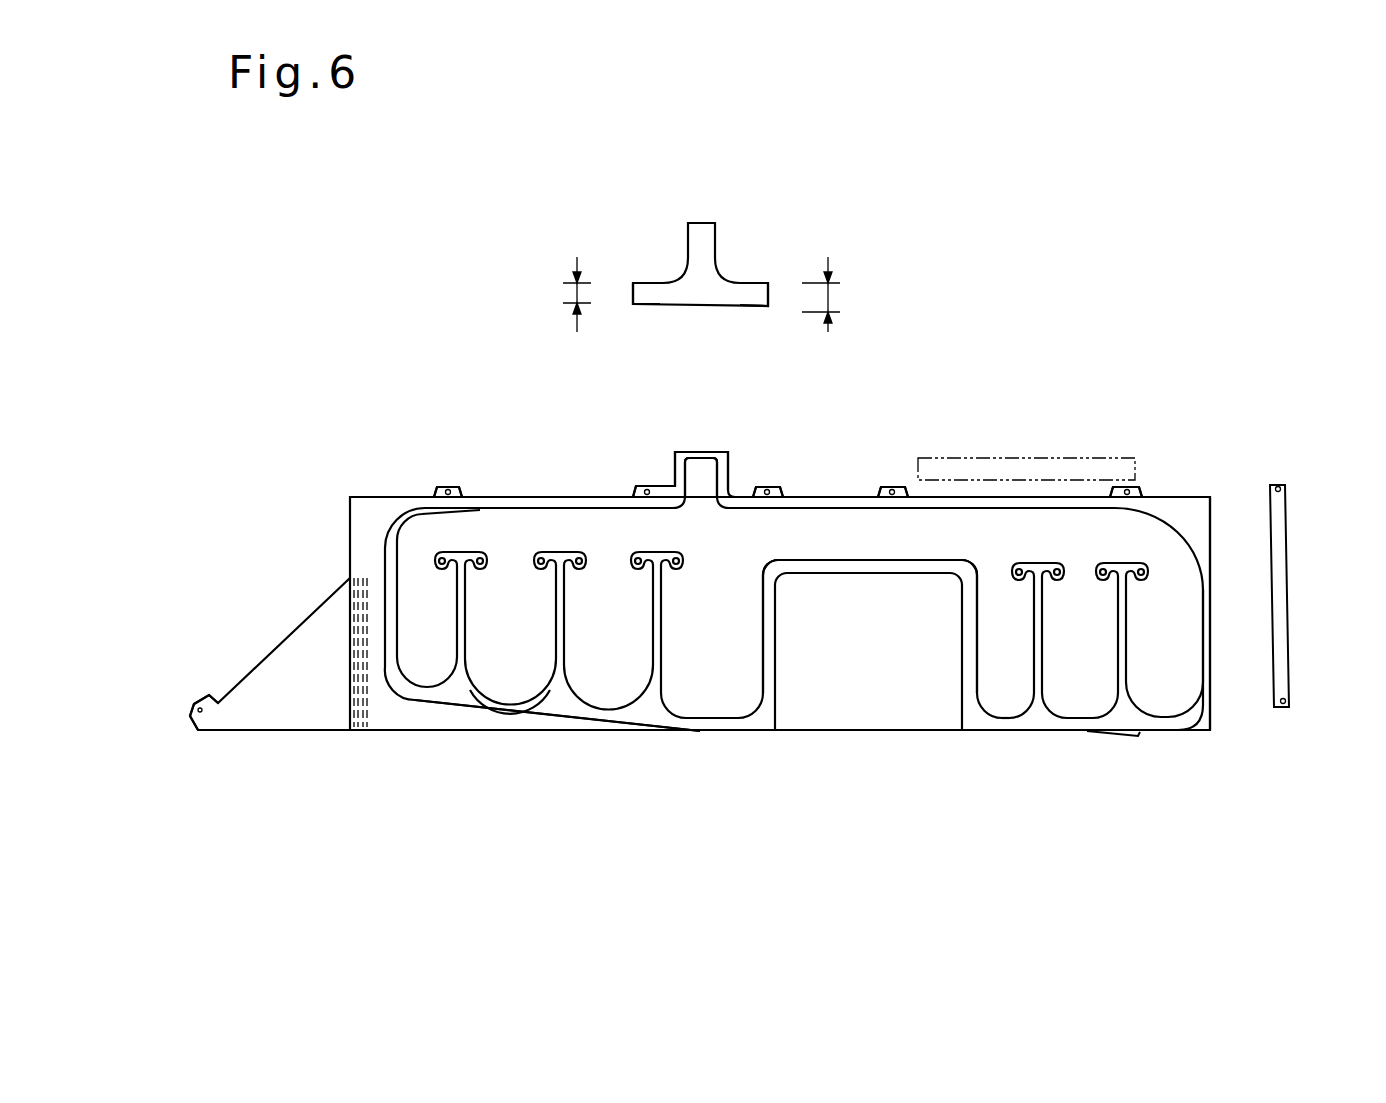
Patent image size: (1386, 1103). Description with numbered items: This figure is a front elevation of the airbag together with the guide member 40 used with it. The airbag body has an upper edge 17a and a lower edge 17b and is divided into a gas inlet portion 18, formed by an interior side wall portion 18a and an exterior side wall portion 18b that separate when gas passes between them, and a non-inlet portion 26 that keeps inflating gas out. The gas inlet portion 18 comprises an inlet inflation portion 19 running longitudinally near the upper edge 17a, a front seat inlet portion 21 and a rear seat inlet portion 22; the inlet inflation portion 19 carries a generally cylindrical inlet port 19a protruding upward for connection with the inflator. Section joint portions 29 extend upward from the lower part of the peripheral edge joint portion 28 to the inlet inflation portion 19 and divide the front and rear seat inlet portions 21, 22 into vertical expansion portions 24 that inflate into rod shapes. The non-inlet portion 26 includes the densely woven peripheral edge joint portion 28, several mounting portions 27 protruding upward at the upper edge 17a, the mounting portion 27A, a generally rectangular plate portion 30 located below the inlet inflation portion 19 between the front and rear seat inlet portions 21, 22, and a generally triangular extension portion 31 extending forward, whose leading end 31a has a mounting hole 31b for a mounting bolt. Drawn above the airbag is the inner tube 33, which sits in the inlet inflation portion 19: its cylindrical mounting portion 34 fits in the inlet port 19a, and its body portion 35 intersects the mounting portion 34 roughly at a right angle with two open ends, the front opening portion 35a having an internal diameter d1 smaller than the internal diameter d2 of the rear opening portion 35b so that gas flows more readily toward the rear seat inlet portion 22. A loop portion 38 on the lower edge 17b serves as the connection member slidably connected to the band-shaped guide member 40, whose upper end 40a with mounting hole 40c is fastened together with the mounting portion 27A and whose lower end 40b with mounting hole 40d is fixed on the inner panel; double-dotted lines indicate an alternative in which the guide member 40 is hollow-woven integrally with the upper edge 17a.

The inner tube 33 is at (709, 263).
The mounting portion 34 is at (703, 233).
The body portion 35 is at (697, 292).
The opening portion 35a is at (632, 297).
The opening portion 35b is at (768, 300).
The internal diameter d1 is at (567, 295).
The internal diameter d2 is at (836, 296).
The non-inlet portion 26 is at (693, 601).
The upper edge 17a is at (848, 500).
The lower edge 17b is at (708, 718).
The peripheral edge joint portion 28 is at (1190, 510).
The mounting portion 27 is at (440, 490).
The mounting portion 27A is at (1135, 490).
The plate portion 30 is at (865, 710).
The extension portion 31 is at (253, 698).
The leading end 31a is at (203, 700).
The mounting hole 31b is at (200, 716).
The loop portion 38 is at (1128, 740).
The gas inlet portion 18 is at (818, 633).
The interior side wall portion 18a is at (487, 528).
The exterior side wall portion 18b is at (548, 525).
The inlet inflation portion 19 is at (826, 545).
The inlet port 19a is at (703, 470).
The front seat inlet portion 21 is at (520, 700).
The rear seat inlet portion 22 is at (1033, 718).
The vertical expansion portion 24 is at (428, 665).
The section joint portion 29 is at (557, 590).
The guide member 40 is at (1148, 605).
The upper end 40a is at (1280, 500).
The lower end 40b is at (1286, 690).
The mounting hole 40c is at (1278, 486).
The mounting hole 40d is at (1283, 718).